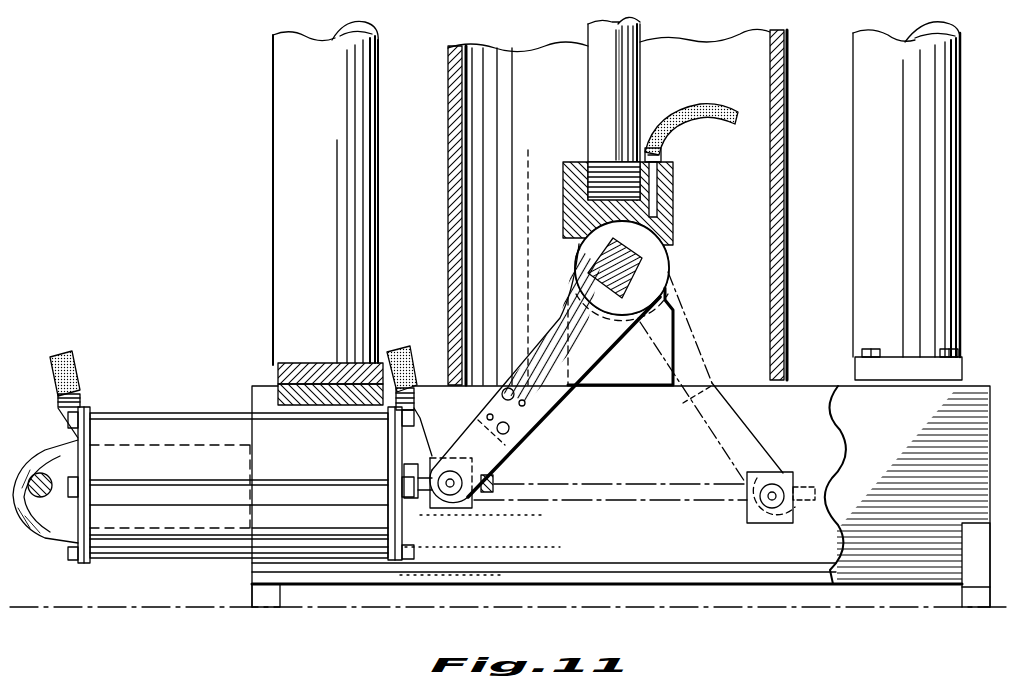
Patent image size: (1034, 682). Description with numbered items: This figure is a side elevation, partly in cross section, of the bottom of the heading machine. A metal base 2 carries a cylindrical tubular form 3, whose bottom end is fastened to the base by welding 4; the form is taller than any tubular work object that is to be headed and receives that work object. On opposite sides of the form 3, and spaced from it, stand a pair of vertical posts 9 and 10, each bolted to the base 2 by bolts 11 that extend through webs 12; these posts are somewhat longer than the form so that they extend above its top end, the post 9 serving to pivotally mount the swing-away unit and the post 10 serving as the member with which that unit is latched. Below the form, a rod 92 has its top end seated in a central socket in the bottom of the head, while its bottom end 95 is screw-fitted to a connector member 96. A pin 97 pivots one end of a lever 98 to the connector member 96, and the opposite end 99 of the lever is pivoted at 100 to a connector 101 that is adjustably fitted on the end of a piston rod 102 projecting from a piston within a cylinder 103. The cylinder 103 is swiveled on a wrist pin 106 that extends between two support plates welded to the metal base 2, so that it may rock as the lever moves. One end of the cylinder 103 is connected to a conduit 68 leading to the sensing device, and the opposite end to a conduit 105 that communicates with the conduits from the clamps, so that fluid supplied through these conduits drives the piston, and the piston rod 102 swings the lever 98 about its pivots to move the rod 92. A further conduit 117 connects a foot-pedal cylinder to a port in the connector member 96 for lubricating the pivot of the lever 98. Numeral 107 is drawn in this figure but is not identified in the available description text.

The metal base 2 is at (958, 487).
The cylindrical tubular form 3 is at (456, 212).
The welding 4 is at (788, 380).
The vertical post 9 is at (940, 175).
The vertical post 10 is at (292, 181).
The bolt 11 is at (864, 350).
The web 12 is at (290, 378).
The conduit 68 is at (72, 354).
The rod 92 is at (620, 57).
The bottom end of rod 95 is at (600, 116).
The connector member 96 is at (578, 184).
The pin 97 is at (625, 262).
The lever 98 is at (712, 357).
The opposite end of lever 99 is at (508, 458).
The pivot 100 is at (470, 492).
The connector 101 is at (458, 512).
The piston rod 102 is at (432, 458).
The cylinder 103 is at (190, 440).
The conduit 105 is at (432, 344).
The wrist pin 106 is at (40, 473).
The clevis 107 is at (33, 530).
The conduit 117 is at (704, 115).